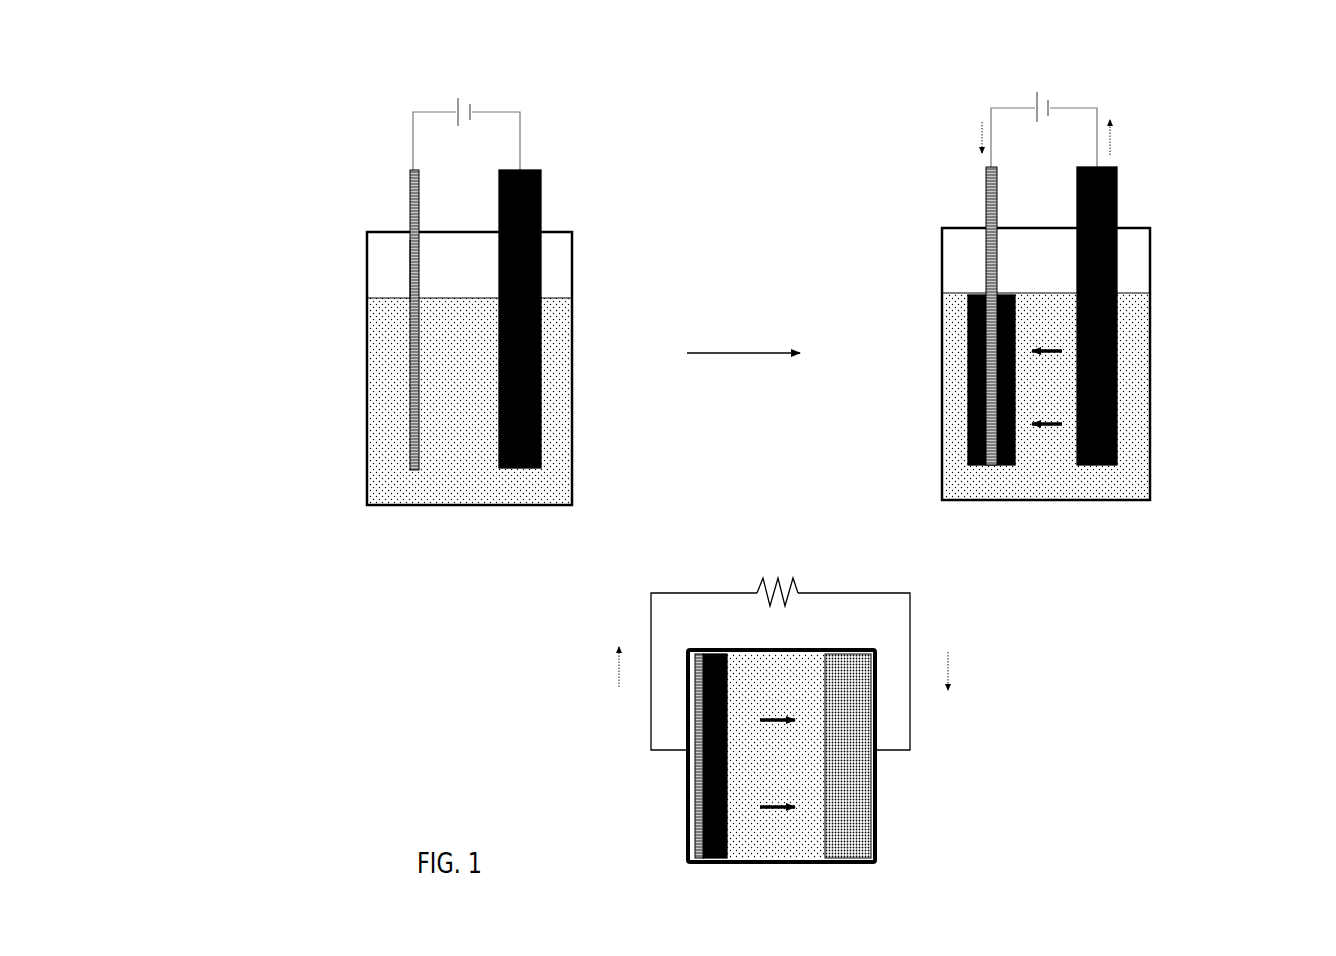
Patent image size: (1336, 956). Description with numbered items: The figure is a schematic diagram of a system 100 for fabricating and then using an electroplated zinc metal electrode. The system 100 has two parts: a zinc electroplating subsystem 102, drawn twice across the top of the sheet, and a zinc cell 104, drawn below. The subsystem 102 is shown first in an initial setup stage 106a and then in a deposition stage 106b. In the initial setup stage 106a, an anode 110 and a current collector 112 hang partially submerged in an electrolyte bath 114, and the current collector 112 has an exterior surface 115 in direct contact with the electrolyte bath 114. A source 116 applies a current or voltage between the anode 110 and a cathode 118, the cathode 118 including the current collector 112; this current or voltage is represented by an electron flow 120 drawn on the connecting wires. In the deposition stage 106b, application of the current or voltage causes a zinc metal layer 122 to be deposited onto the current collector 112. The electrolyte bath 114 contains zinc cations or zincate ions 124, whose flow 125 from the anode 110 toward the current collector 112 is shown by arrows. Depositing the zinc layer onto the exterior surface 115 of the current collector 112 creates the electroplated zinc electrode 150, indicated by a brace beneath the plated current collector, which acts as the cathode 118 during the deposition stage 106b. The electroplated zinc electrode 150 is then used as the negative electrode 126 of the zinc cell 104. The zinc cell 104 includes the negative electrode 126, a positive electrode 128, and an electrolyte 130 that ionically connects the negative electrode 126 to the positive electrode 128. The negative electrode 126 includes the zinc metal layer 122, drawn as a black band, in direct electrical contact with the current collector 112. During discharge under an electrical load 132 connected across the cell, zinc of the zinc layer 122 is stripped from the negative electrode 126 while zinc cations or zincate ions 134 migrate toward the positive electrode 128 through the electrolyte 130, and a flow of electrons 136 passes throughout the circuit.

The system 100 is at (240, 71).
The zinc electroplating subsystem 102 is at (256, 247).
The zinc cell 104 is at (505, 581).
The initial setup stage 106a is at (586, 97).
The deposition stage 106b is at (1234, 77).
The anode 110 is at (543, 184).
The current collector 112 is at (406, 196).
The electrolyte bath 114 is at (500, 492).
The exterior surface 115 is at (408, 265).
The source 116 is at (1033, 64).
The cathode 118 is at (958, 393).
The electron flow 120 is at (950, 128).
The zinc metal layer 122 is at (966, 325).
The Zn2+ cations 124 is at (1036, 372).
The flow 125 is at (1037, 434).
The negative electrode 126 is at (684, 817).
The positive electrode 128 is at (877, 808).
The electrolyte 130 is at (769, 842).
The electrical load 132 is at (824, 551).
The Zn2+ cations 134 is at (769, 759).
The flow of electrons 136 is at (609, 662).
The electroplated zinc electrode 150 is at (963, 452).